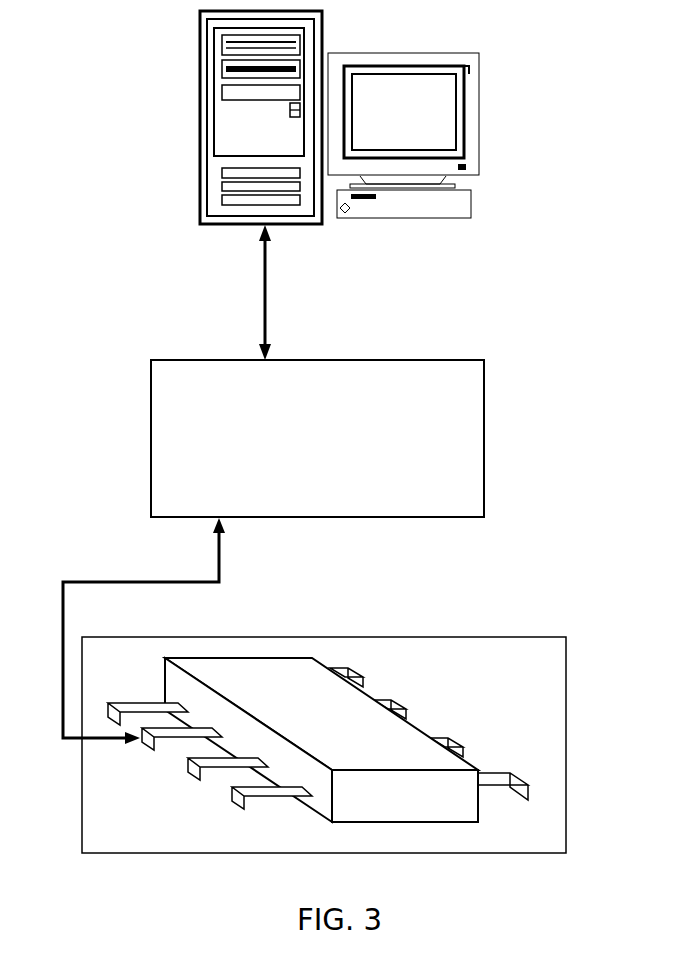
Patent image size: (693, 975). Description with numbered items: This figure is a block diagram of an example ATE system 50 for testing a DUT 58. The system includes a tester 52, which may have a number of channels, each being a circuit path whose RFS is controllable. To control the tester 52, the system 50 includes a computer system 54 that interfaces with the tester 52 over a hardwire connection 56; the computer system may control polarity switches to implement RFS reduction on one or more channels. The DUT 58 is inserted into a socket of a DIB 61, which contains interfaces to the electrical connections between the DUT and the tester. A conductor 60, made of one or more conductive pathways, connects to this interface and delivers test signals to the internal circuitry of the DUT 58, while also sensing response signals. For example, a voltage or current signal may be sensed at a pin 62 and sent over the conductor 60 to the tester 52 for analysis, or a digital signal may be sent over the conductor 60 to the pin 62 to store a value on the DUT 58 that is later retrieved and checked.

The ATE system 50 is at (638, 255).
The tester 52 is at (442, 360).
The computer system 54 is at (200, 76).
The hardwire connection 56 is at (268, 280).
The DUT 58 is at (318, 714).
The conductor 60 is at (222, 548).
The DIB 61 is at (553, 722).
The pin 62 is at (148, 749).